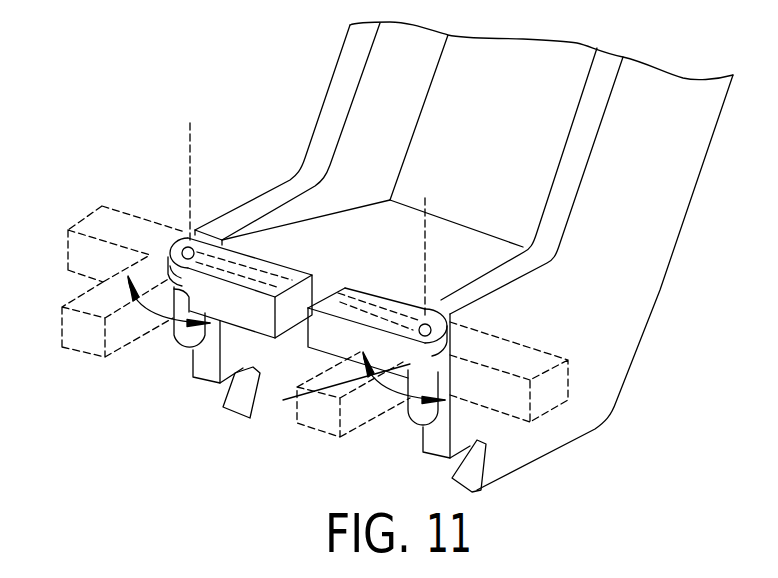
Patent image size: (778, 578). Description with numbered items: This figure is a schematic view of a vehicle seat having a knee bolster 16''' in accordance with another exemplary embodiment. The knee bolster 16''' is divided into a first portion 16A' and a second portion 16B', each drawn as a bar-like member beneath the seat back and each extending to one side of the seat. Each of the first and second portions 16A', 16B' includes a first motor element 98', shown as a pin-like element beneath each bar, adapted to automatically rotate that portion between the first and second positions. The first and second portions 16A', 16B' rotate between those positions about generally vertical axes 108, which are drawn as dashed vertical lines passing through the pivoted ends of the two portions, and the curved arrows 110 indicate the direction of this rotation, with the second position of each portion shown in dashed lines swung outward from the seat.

The pivot axis 108 is at (189, 173).
The rotation direction arrow 110 is at (155, 317).
The first motor element 98' is at (279, 389).
The knee bolster 16''' is at (315, 349).
The first portion 16A' is at (187, 326).
The second portion 16B' is at (377, 390).